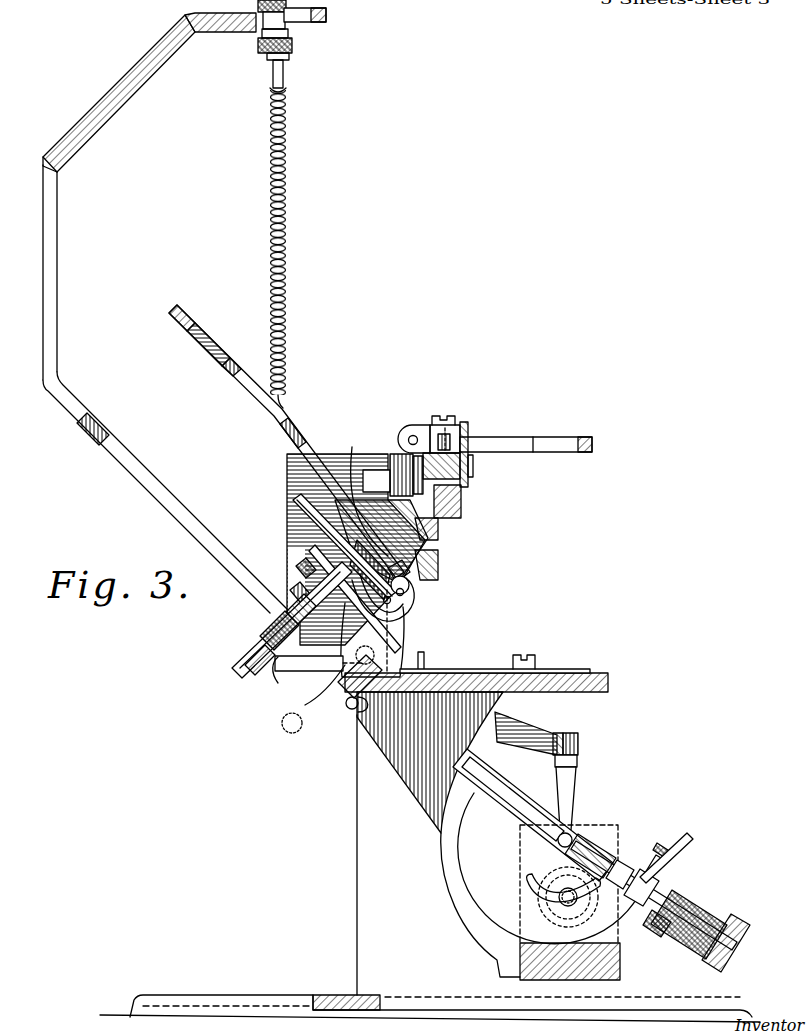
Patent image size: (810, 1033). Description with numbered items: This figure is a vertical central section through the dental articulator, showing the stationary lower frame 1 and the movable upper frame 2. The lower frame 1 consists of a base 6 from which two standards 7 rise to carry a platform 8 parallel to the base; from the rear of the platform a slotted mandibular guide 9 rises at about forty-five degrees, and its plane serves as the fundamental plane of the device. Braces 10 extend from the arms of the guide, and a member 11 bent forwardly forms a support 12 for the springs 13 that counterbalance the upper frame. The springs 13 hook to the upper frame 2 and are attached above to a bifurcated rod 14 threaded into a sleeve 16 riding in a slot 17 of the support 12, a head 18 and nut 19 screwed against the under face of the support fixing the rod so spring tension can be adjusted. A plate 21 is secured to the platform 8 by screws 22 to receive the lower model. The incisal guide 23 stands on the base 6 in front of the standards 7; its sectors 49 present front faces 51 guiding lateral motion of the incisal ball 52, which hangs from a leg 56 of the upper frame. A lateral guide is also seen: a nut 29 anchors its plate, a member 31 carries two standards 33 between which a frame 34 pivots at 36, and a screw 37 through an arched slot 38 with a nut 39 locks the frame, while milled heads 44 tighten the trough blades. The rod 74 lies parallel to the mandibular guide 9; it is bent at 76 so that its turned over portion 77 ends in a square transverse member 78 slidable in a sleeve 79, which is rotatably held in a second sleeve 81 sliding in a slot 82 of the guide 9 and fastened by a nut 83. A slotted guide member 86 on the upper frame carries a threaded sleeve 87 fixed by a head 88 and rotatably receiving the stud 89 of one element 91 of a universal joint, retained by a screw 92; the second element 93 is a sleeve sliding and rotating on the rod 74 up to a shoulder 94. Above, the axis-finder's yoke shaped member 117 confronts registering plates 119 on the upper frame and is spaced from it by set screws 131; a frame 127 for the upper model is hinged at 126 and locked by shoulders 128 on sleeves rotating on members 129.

The lower frame 1 is at (236, 580).
The upper frame 2 is at (306, 438).
The base 6 is at (270, 995).
The standards 7 is at (357, 830).
The platform 8 is at (541, 692).
The mandibular guide 9 is at (120, 468).
The braces 10 is at (57, 264).
The member 11 is at (126, 90).
The support 12 is at (216, 32).
The springs 13 is at (286, 231).
The bifurcated rod 14 is at (286, 65).
The sleeve 16 is at (262, 28).
The slot 17 is at (300, 14).
The head 18 is at (258, 6).
The nut 19 is at (292, 46).
The plate 21 is at (582, 672).
The screws 22 is at (536, 660).
The incisal guide 23 is at (612, 835).
The nut 29 is at (352, 708).
The member 31 is at (318, 674).
The standards 33 is at (392, 657).
The frame 34 is at (300, 592).
The pivot 36 is at (414, 611).
The screw 37 is at (292, 723).
The arched slot 38 is at (305, 706).
The nut 39 is at (365, 655).
The milled heads 44 is at (300, 566).
The sectors 49 is at (590, 830).
The front faces 51 is at (553, 822).
The ball 52 is at (560, 847).
The leg 56 is at (572, 782).
The rod 74 is at (300, 512).
The bend 76 is at (406, 612).
The turned over portion 77 is at (336, 572).
The transverse member 78 is at (250, 675).
The sleeve 79 is at (272, 630).
The second sleeve 81 is at (310, 668).
The slot 82 is at (172, 502).
The nut 83 is at (268, 619).
The slotted guide member 86 is at (283, 410).
The threaded sleeve 87 is at (440, 556).
The head 88 is at (440, 531).
The stud 89 is at (402, 576).
The element of universal joint 91 is at (366, 490).
The screw 92 is at (462, 510).
The second element of universal joint 93 is at (404, 592).
The shoulder 94 is at (400, 598).
The yoke shaped member 117 is at (473, 466).
The registering plates 119 is at (292, 530).
The hinges 126 is at (406, 430).
The frame 127 is at (490, 441).
The shoulders 128 is at (456, 425).
The members 129 is at (431, 418).
The set screws 131 is at (452, 436).